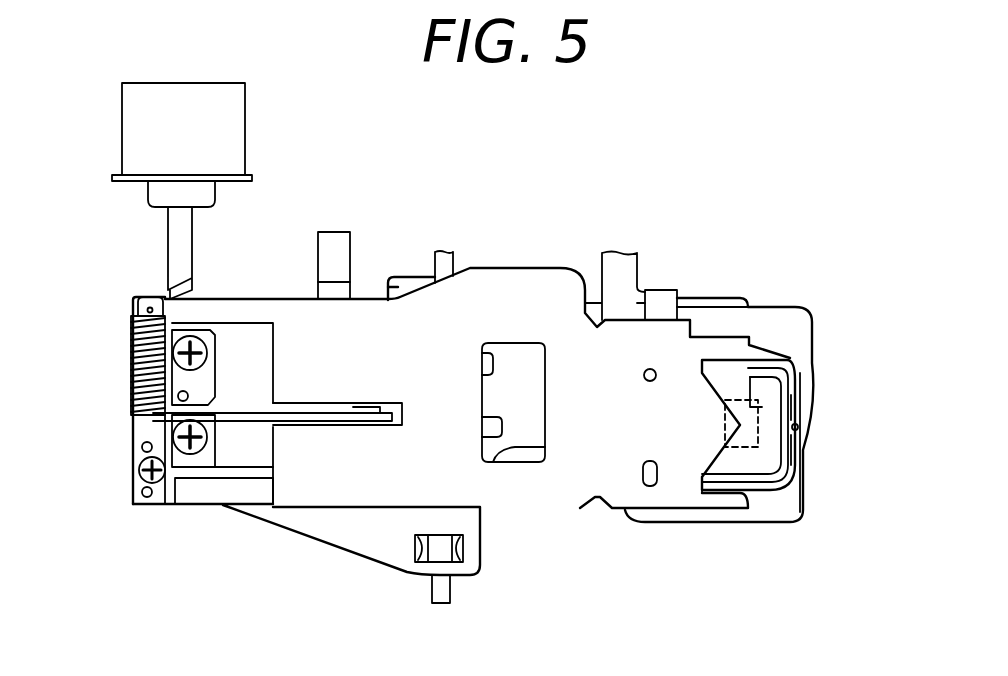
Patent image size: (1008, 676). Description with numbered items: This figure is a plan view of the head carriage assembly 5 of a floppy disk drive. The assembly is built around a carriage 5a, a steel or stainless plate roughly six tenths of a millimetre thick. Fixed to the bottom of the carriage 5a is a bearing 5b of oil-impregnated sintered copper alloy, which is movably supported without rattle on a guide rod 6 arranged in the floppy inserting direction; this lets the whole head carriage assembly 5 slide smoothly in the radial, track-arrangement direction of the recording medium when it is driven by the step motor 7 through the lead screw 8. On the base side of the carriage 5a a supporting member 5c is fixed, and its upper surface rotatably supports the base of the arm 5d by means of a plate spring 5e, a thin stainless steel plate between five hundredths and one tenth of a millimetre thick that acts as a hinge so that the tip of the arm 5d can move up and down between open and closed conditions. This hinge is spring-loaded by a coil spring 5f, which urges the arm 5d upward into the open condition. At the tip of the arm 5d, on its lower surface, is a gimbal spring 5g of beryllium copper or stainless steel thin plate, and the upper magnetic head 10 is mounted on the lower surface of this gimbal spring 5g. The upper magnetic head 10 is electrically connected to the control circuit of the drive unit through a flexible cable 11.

The head carriage assembly 5 is at (521, 517).
The carriage 5a is at (800, 318).
The bearing 5b is at (440, 548).
The supporting member 5c is at (163, 504).
The arm 5d is at (625, 500).
The plate spring 5e is at (232, 460).
The coil spring 5f is at (130, 382).
The gimbal spring 5g is at (790, 378).
The guide rod 6 is at (440, 253).
The step motor 7 is at (238, 130).
The lead screw 8 is at (180, 236).
The upper magnetic head 10 is at (758, 423).
The flexible cable 11 is at (661, 296).